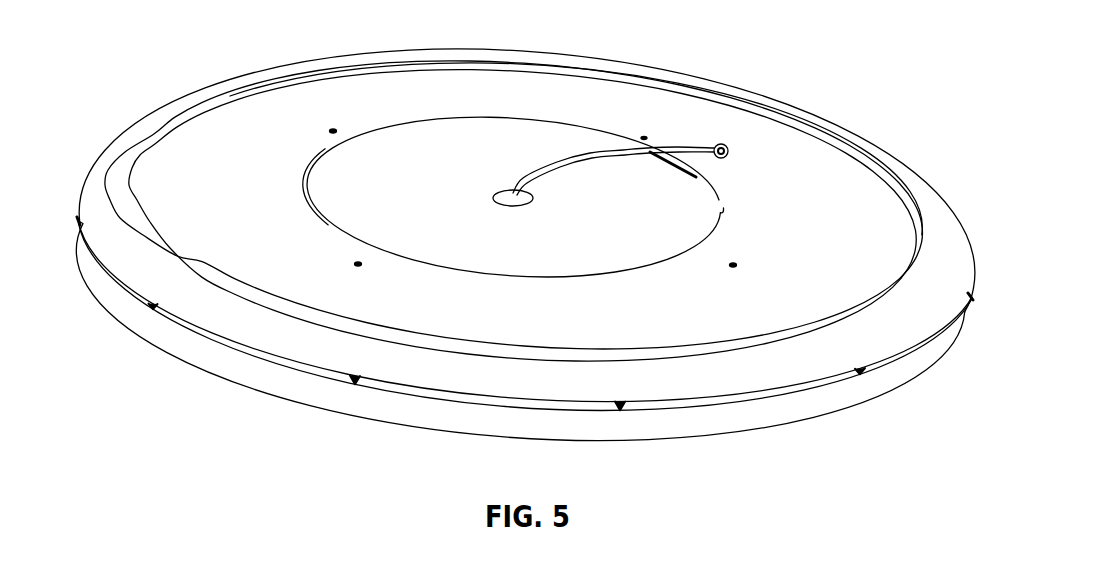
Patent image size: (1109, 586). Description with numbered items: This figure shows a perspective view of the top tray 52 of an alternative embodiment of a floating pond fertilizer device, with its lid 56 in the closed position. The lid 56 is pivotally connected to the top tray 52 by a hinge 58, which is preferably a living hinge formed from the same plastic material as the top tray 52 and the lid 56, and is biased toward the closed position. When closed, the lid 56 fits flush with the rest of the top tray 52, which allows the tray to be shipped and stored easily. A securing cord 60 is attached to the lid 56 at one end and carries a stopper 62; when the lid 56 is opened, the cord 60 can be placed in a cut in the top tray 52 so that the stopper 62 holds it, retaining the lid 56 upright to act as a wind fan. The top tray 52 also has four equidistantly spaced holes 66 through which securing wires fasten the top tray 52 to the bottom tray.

The top tray 52 is at (163, 147).
The lid 56 is at (528, 147).
The hinge 58 is at (720, 191).
The securing cord 60 is at (655, 148).
The stopper 62 is at (727, 146).
The hole 66 is at (333, 125).